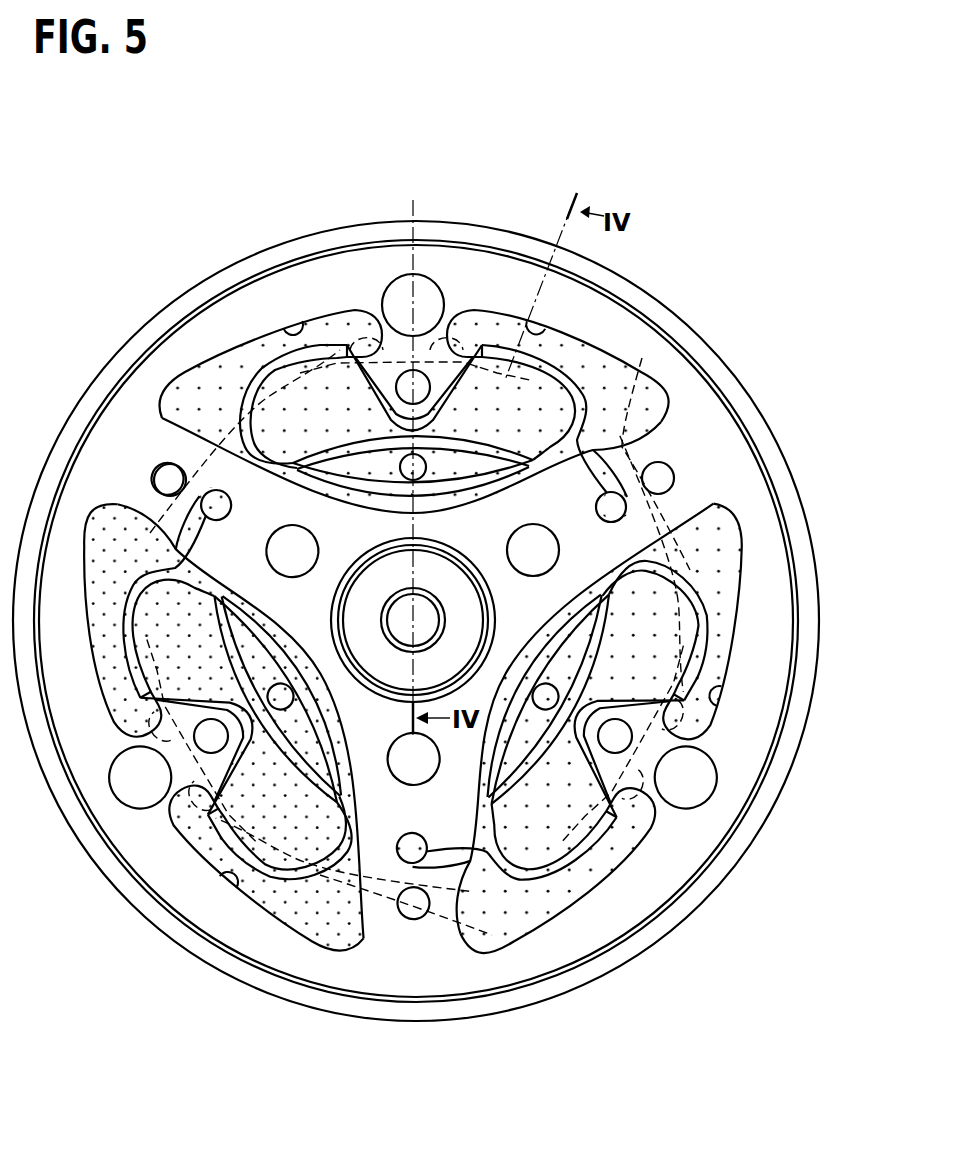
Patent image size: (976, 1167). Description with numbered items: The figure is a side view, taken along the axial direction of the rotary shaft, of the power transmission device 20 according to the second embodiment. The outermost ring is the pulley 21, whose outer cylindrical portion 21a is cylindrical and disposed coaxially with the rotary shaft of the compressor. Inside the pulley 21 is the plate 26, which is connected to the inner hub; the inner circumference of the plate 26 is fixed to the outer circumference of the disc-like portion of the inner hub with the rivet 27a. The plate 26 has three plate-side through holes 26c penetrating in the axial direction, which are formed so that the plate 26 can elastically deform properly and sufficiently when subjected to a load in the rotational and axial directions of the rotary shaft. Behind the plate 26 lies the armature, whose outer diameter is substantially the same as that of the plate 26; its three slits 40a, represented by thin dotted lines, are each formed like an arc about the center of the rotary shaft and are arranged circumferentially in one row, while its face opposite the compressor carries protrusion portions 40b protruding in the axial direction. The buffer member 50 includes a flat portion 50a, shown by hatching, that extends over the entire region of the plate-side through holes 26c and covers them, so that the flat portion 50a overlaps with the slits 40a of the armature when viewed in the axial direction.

The power transmission device 20 is at (657, 263).
The pulley 21 is at (416, 621).
The outer cylindrical portion 21a is at (263, 247).
The plate 26 is at (173, 360).
The plate-side through holes 26c is at (296, 325).
The rivet 27a is at (285, 512).
The slits 40a is at (95, 560).
The protrusion portions 40b is at (405, 383).
The buffer member 50 is at (364, 646).
The flat portion 50a is at (230, 373).